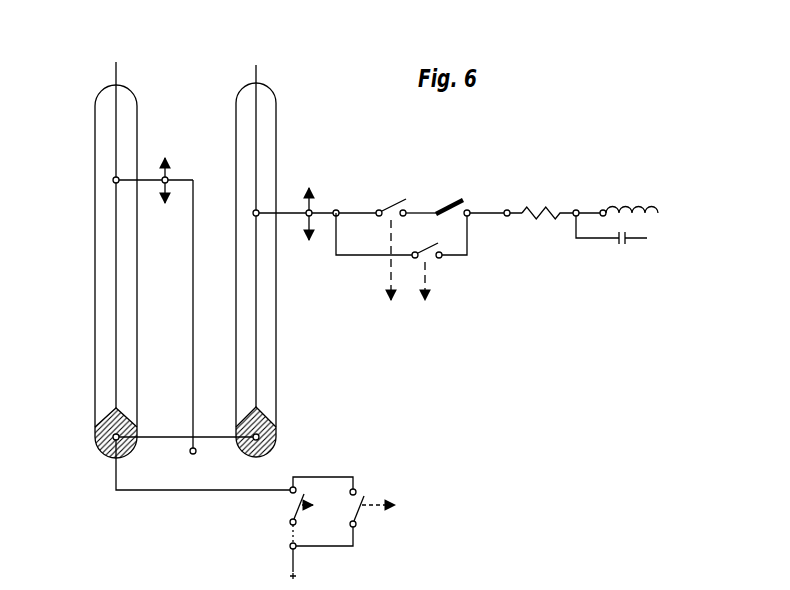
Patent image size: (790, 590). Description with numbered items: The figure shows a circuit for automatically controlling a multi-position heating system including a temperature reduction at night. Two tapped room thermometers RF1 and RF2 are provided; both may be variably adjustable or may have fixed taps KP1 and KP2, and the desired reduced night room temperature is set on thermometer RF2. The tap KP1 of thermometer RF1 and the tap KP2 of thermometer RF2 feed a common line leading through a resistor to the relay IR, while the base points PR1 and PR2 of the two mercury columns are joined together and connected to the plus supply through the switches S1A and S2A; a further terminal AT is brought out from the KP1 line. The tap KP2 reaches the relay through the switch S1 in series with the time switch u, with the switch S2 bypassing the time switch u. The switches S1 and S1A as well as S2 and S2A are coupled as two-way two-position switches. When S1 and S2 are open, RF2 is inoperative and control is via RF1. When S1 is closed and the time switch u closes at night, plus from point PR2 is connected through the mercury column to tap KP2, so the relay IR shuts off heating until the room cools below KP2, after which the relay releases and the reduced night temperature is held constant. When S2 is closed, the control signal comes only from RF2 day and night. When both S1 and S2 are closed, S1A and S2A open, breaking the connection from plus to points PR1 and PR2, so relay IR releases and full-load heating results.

The tapped room thermometer RF1 is at (116, 236).
The tapped room thermometer RF2 is at (256, 235).
The fixed tap KP1 is at (127, 181).
The fixed tap KP2 is at (294, 216).
The point PR1 is at (157, 438).
The point PR2 is at (228, 430).
The terminal AT is at (191, 328).
The switch S1 is at (363, 357).
The switch S2 is at (401, 370).
The switch S1A is at (256, 356).
The switch S2A is at (367, 420).
The time switch u is at (479, 195).
The relay IR is at (617, 205).